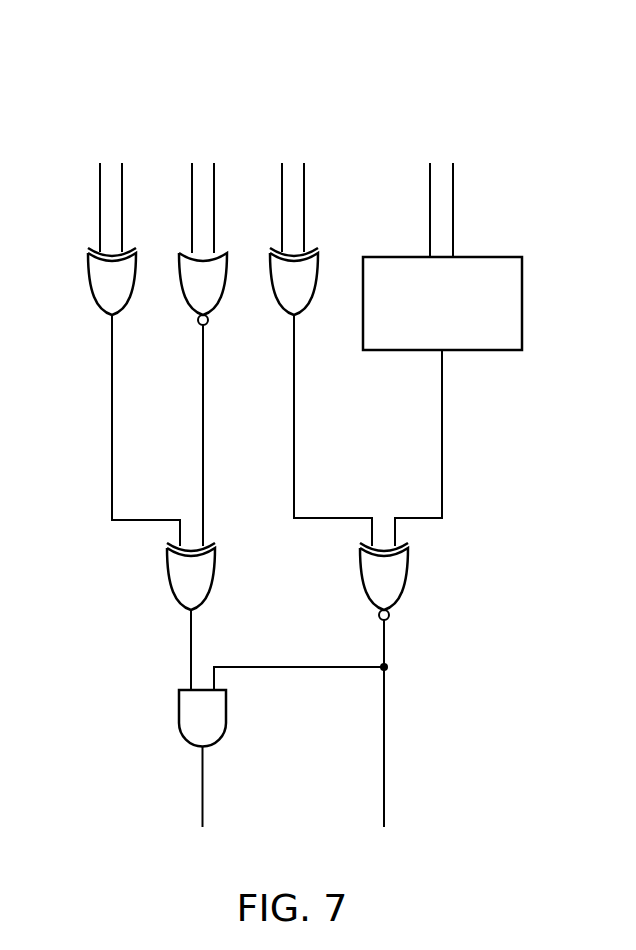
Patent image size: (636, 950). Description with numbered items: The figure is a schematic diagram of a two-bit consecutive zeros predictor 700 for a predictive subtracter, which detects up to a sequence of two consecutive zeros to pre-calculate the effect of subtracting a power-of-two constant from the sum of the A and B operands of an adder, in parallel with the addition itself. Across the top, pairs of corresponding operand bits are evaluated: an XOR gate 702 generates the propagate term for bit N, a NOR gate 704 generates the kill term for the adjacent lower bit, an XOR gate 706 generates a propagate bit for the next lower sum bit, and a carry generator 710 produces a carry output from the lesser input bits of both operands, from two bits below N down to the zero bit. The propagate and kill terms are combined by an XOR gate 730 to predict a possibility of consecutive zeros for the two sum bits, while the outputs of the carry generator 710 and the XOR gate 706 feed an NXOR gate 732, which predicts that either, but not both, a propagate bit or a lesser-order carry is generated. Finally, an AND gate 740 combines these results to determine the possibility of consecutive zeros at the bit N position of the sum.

The two-bit consecutive zeros predictor 700 is at (387, 128).
The XOR gate 702 is at (93, 300).
The NOR gate 704 is at (185, 300).
The XOR gate 706 is at (312, 300).
The carry generator 710 is at (475, 350).
The XOR gate 730 is at (167, 580).
The NXOR gate 732 is at (408, 578).
The AND gate 740 is at (181, 737).